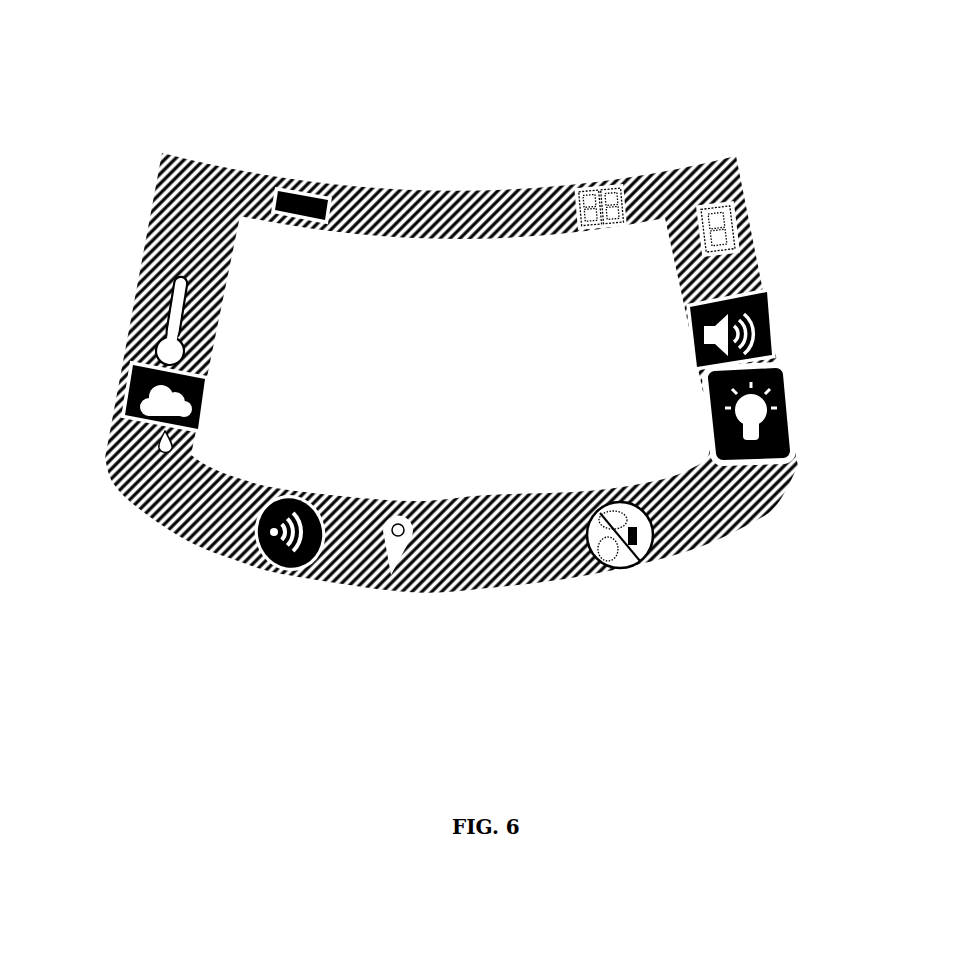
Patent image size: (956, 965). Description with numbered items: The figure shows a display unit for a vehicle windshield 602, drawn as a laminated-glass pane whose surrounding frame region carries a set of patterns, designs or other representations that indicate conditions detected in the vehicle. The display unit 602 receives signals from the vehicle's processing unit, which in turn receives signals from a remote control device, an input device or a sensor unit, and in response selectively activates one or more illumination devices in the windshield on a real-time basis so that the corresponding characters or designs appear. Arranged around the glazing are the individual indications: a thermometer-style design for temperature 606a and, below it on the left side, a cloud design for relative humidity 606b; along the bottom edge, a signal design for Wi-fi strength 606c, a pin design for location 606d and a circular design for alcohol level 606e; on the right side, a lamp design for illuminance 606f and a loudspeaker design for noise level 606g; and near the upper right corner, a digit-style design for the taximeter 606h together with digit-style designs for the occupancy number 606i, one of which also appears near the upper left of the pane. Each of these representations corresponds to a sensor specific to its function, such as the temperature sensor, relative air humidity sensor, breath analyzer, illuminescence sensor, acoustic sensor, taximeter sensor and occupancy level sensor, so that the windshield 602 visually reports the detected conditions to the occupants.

The display unit for windshield 602 is at (433, 151).
The temperature representation 606a is at (115, 295).
The relative humidity representation 606b is at (140, 397).
The Wi-fi strength representation 606c is at (273, 558).
The location representation 606d is at (383, 573).
The alcohol level representation 606e is at (620, 560).
The illuminance representation 606f is at (778, 407).
The noise level representation 606g is at (748, 327).
The taximeter representation 606h is at (720, 220).
The occupancy number representation 606i is at (291, 183).